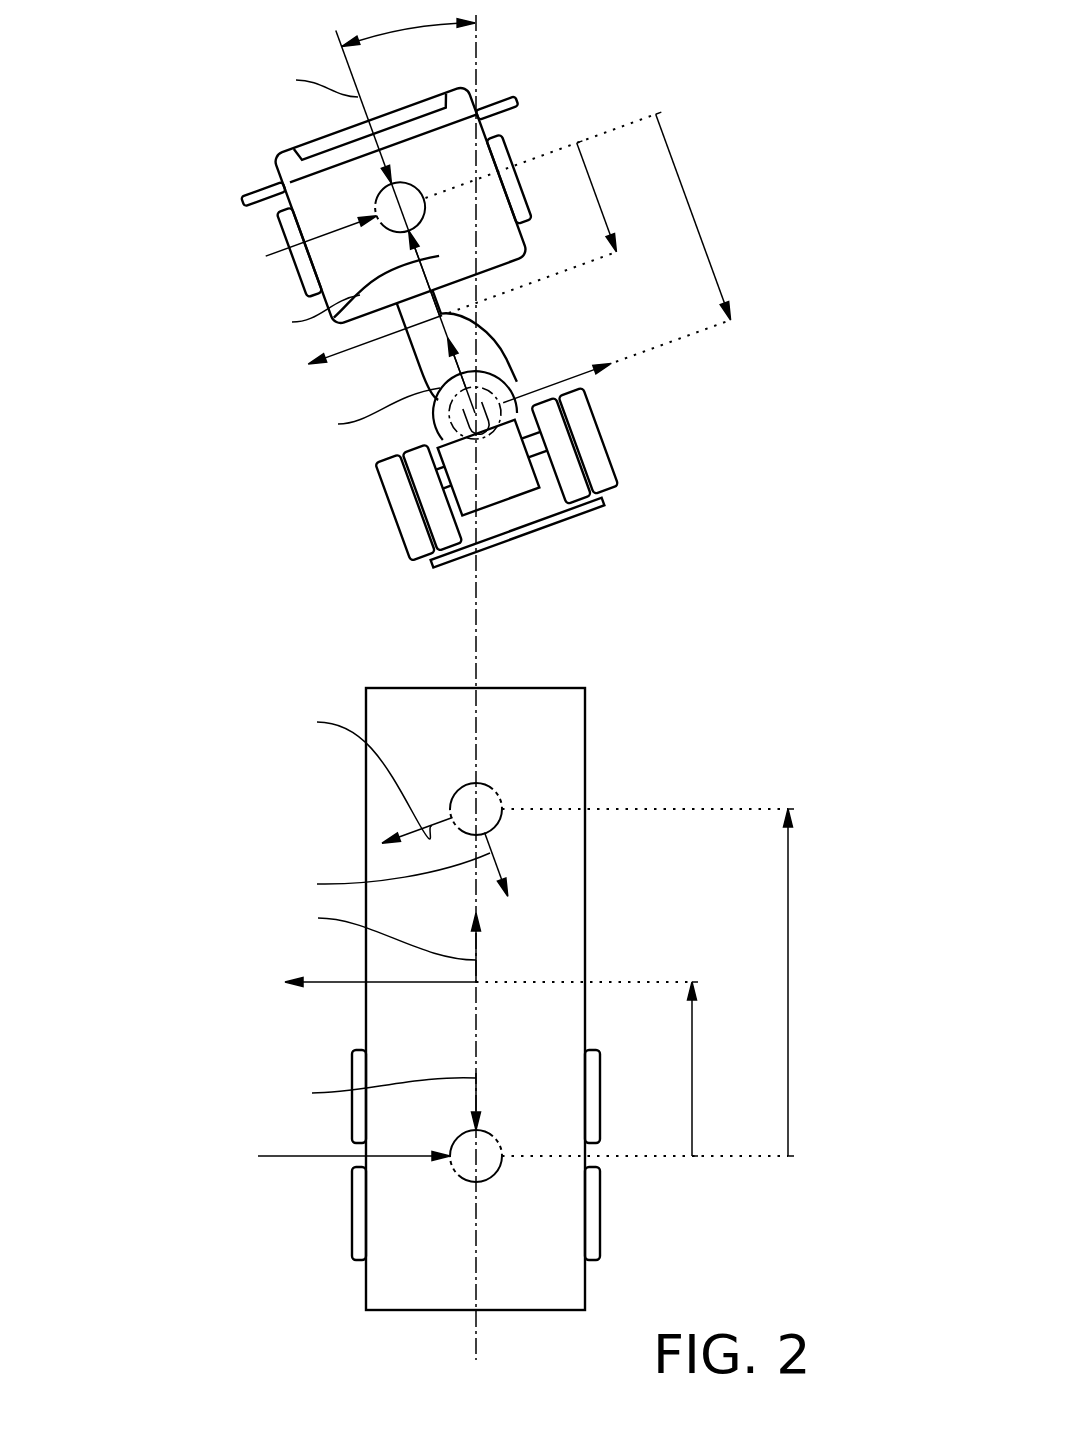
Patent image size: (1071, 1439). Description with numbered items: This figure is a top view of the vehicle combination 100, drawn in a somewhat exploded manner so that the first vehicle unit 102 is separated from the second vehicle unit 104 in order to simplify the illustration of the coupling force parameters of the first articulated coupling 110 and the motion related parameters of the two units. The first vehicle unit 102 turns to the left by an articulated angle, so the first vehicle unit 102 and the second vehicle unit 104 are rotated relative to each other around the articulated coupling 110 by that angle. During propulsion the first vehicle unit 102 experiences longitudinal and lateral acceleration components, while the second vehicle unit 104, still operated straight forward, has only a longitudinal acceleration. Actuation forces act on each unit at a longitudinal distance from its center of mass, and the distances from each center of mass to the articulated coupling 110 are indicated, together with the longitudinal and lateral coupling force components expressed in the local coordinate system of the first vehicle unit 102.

The vehicle combination 100 is at (440, 680).
The first vehicle unit 102 is at (493, 213).
The second vehicle unit 104 is at (547, 750).
The first articulated coupling 110 is at (430, 418).